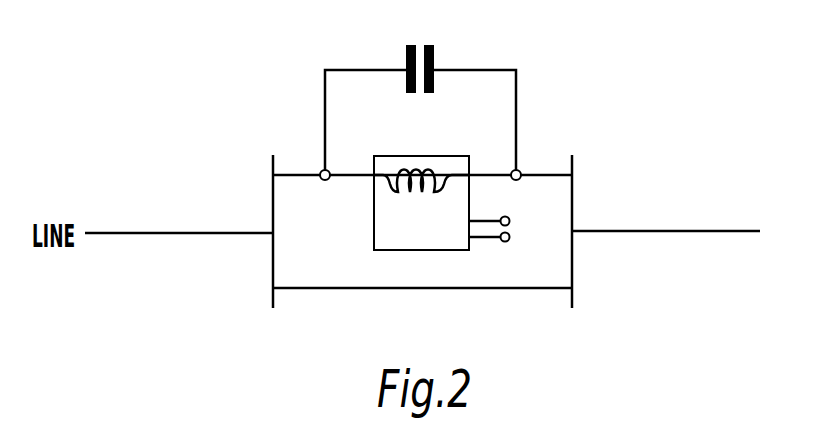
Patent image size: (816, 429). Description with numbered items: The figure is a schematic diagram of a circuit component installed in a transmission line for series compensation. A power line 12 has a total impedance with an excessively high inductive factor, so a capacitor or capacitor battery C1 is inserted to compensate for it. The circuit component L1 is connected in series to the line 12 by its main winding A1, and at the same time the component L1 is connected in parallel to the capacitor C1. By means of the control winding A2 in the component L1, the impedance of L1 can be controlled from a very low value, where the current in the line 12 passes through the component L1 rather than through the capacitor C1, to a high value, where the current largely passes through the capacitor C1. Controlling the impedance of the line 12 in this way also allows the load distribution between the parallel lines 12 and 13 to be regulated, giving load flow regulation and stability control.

The power line 12 is at (422, 158).
The line 13 is at (422, 273).
The capacitor C1 is at (420, 93).
The circuit component L1 is at (421, 203).
The main winding A1 is at (342, 191).
The control winding A2 is at (504, 230).